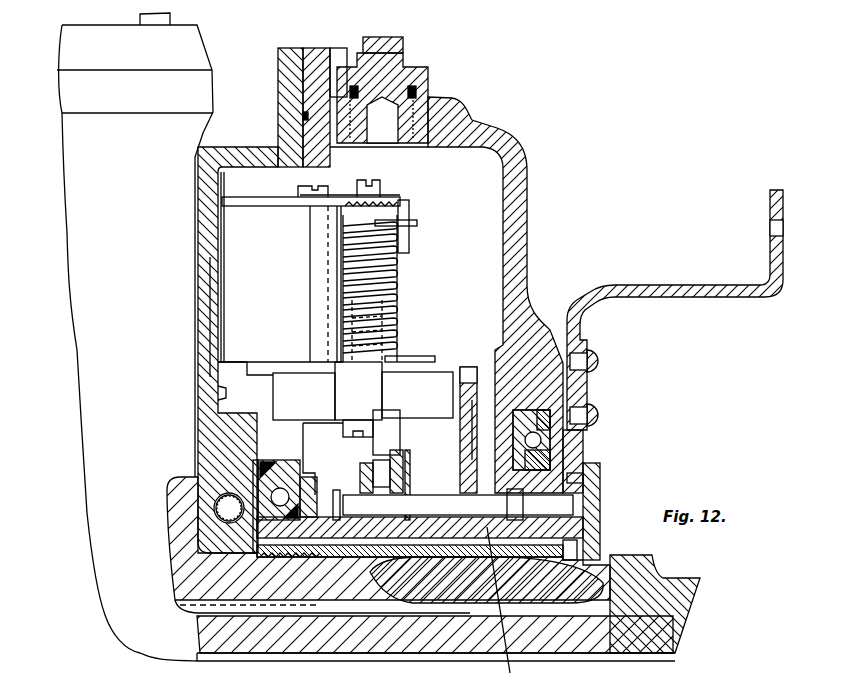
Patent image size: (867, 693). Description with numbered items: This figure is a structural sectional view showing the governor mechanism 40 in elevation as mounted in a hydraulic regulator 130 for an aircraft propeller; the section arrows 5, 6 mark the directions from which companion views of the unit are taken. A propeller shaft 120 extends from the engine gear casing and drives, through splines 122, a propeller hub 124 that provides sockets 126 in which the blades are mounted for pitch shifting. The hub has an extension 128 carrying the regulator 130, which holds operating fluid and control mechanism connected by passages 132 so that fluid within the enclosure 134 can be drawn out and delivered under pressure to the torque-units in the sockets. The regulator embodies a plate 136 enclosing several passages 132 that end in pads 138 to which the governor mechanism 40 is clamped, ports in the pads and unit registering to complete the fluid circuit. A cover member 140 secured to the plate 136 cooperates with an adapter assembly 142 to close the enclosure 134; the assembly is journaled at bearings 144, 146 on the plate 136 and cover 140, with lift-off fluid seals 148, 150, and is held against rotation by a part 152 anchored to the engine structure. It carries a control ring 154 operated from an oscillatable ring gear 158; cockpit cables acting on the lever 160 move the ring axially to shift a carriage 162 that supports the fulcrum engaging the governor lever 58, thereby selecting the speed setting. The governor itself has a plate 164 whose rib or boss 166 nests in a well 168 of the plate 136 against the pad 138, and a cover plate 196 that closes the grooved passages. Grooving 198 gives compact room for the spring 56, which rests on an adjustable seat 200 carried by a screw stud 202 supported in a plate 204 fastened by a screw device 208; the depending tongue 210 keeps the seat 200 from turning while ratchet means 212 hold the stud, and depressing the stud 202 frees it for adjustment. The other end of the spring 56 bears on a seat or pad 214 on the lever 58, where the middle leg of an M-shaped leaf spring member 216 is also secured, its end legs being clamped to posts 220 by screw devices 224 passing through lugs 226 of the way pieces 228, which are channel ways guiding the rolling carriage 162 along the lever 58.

The section line 5 is at (434, 268).
The section line 6 is at (342, 196).
The governor mechanism 40 is at (442, 321).
The spring 56 is at (400, 271).
The lever 58 is at (400, 361).
The propeller shaft 120 is at (680, 629).
The splines 122 is at (310, 606).
The propeller hub 124 is at (182, 570).
The sockets 126 is at (95, 362).
The extension 128 is at (463, 590).
The regulator 130 is at (458, 116).
The passages 132 is at (224, 508).
The enclosure 134 is at (493, 182).
The plate 136 is at (210, 184).
The pads 138 is at (214, 281).
The cover member 140 is at (527, 214).
The adapter assembly 142 is at (509, 608).
The journal bearing 144 is at (320, 486).
The journal bearing 146 is at (503, 450).
The lift-off fluid seal 148 is at (266, 486).
The lift-off fluid seal 150 is at (545, 446).
The part anchored to engine structure 152 is at (598, 487).
The control ring 154 is at (404, 478).
The oscillatable ring gear 158 is at (583, 455).
The lever 160 is at (666, 284).
The carriage 162 is at (390, 430).
The plate 164 is at (282, 317).
The rib or boss 166 is at (230, 311).
The socket or well 168 is at (222, 389).
The cover plate 196 is at (340, 300).
The machining or grooving 198 is at (328, 270).
The adjustable seat 200 is at (378, 221).
The screw stud 202 is at (378, 192).
The plate 204 is at (280, 206).
The screw device 208 is at (302, 190).
The depending lug or tongue 210 is at (410, 240).
The ratchet means 212 is at (394, 203).
The seat or pad 214 is at (395, 360).
The flat leaf spring member 216 is at (410, 361).
The studs or posts 220 is at (342, 345).
The screw devices 224 is at (378, 430).
The lugs 226 is at (352, 384).
The way pieces 228 is at (286, 404).